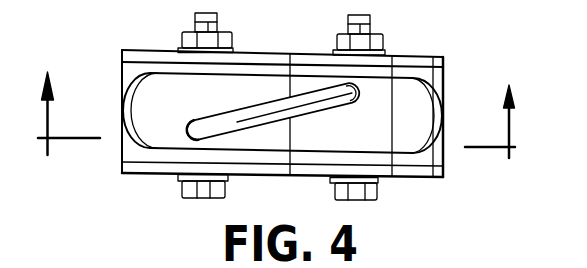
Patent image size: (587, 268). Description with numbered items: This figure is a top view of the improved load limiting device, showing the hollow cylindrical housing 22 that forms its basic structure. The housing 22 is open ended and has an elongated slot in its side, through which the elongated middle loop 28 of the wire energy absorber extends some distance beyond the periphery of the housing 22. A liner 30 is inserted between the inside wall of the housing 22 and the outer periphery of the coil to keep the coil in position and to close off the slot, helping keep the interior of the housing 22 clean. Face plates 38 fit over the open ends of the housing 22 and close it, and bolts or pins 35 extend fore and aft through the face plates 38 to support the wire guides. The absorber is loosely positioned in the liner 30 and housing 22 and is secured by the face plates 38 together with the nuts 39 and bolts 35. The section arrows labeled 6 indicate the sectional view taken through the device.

The hollow cylindrical housing 22 is at (128, 63).
The middle loop 28 is at (221, 121).
The liner 30 is at (403, 130).
The bolts or pins 35 is at (225, 187).
The face plates 38 is at (413, 57).
The nuts 39 is at (224, 32).
The section line 6- 6 is at (275, 113).